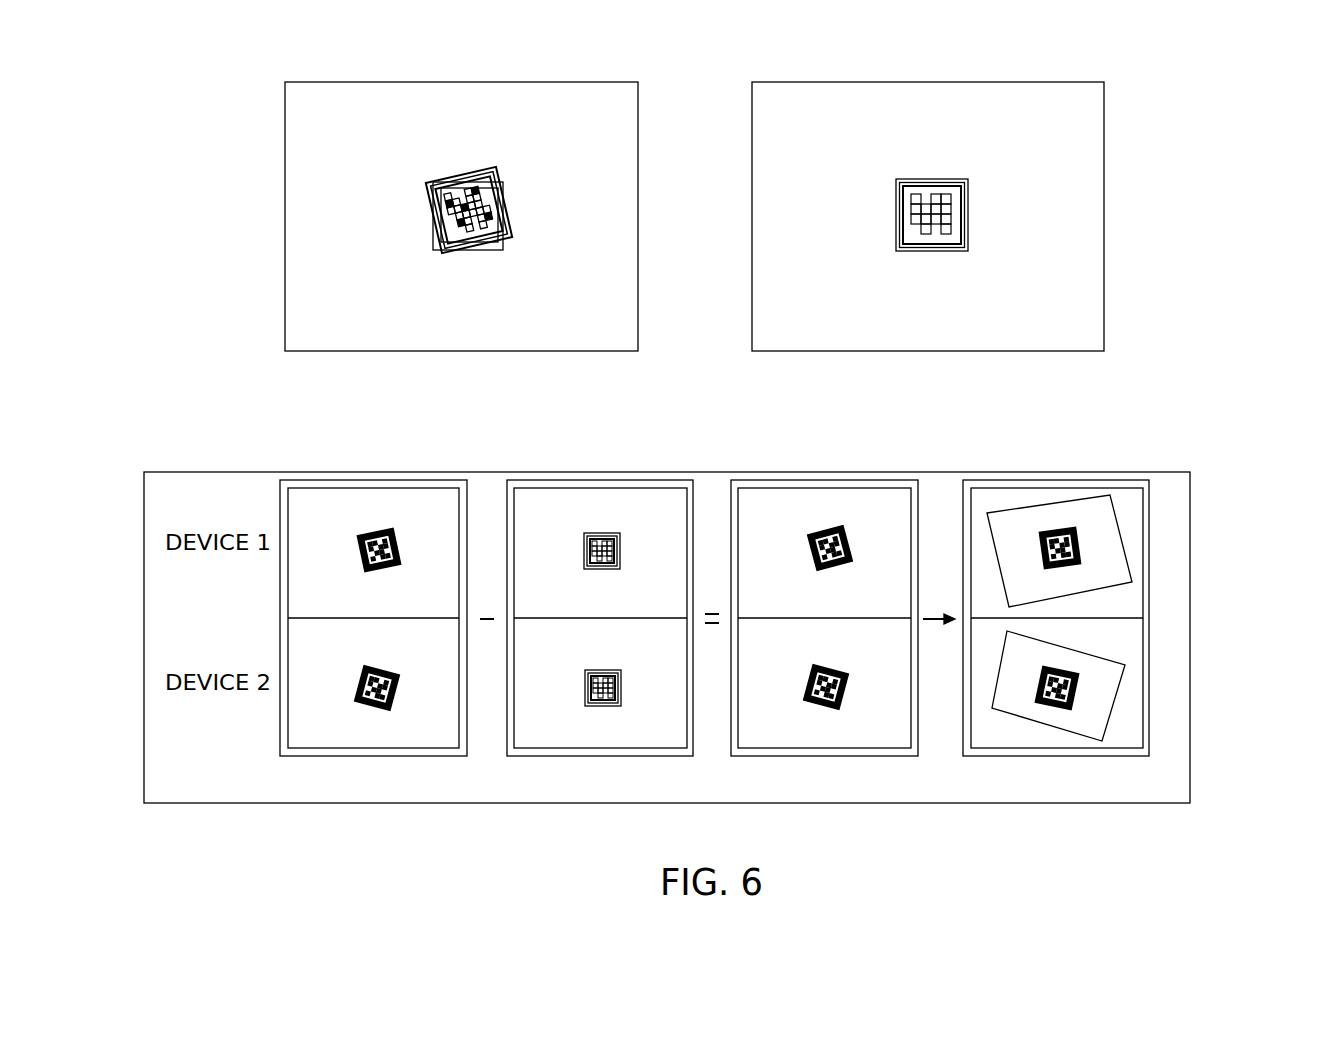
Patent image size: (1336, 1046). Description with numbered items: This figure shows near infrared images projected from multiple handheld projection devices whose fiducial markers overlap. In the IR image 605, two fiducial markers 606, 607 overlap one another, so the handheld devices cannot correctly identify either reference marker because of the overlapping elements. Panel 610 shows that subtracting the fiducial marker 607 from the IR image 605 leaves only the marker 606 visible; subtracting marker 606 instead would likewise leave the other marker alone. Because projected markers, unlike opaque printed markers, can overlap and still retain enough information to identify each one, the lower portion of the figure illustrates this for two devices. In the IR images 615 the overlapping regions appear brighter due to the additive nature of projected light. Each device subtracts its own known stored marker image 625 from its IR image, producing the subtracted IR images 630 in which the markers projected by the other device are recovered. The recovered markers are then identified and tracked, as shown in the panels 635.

The IR image 605 is at (588, 115).
The fiducial marker 606 is at (466, 172).
The fiducial marker 607 is at (505, 185).
The panel 610 is at (940, 178).
The IR images 615 is at (448, 740).
The stored marker image 625 is at (620, 551).
The subtracted IR images 630 is at (900, 738).
The panels 635 is at (1122, 529).